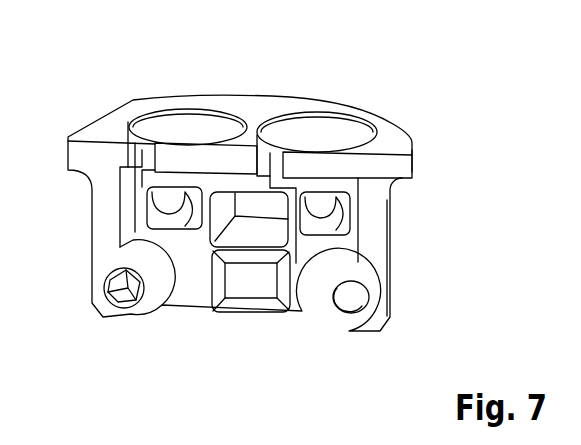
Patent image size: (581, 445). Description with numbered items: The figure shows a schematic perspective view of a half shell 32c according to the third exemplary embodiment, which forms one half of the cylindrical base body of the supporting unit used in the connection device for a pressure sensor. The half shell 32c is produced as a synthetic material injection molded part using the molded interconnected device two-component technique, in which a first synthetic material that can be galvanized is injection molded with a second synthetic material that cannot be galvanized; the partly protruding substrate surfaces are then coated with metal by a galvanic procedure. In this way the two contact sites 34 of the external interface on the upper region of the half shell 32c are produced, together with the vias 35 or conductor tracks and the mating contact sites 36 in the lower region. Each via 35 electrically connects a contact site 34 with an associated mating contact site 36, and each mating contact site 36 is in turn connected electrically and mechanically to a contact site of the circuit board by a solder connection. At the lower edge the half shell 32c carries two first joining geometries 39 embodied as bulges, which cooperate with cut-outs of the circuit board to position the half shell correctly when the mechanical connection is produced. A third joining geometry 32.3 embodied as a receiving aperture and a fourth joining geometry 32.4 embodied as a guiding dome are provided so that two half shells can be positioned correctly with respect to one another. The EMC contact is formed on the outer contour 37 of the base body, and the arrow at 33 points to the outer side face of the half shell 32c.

The half shell 32c is at (104, 86).
The end face 33 is at (406, 173).
The contact site 34 is at (195, 128).
The via 35 is at (147, 156).
The mating contact site 36 is at (172, 215).
The outer contour 37 is at (392, 285).
The first joining geometry 39 is at (172, 284).
The third joining geometry 32.3 is at (355, 308).
The fourth joining geometry 32.4 is at (123, 298).